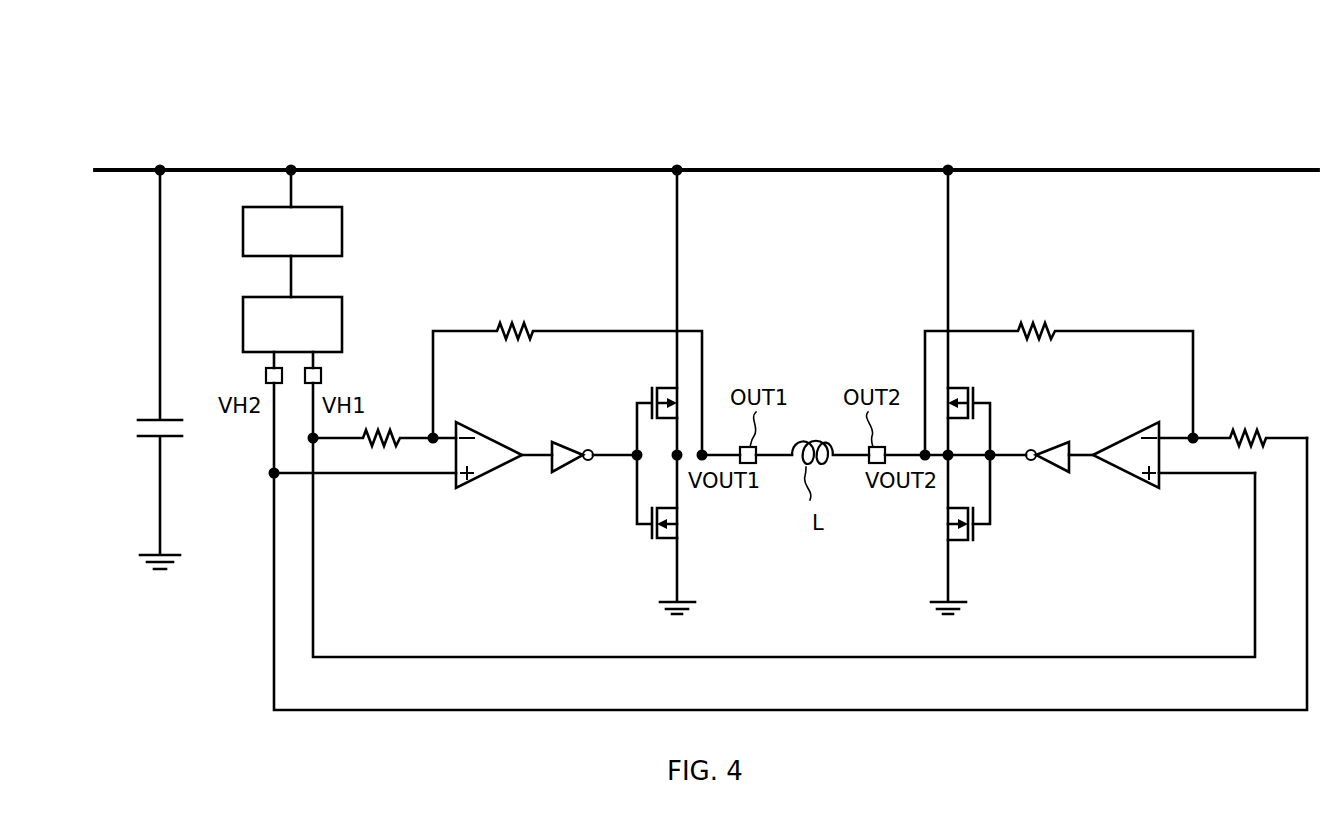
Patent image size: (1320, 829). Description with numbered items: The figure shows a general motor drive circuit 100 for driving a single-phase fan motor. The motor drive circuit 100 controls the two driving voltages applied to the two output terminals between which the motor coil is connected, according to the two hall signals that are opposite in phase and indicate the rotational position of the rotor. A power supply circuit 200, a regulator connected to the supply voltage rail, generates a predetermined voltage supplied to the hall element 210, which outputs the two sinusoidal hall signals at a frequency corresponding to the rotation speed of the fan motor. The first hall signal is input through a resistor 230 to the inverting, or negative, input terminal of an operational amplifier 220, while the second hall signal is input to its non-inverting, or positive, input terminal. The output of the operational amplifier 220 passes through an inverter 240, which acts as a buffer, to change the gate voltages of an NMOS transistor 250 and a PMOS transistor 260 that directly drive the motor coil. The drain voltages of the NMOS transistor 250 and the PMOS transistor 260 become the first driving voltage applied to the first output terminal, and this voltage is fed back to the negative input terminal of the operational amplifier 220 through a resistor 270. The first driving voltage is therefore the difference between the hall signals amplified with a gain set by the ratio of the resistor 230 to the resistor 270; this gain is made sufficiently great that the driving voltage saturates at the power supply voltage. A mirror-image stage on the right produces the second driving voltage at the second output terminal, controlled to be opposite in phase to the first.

The motor drive circuit 100 is at (777, 130).
The power supply circuit 200 is at (345, 237).
The hall element 210 is at (345, 321).
The operational amplifier 220 is at (459, 489).
The resistor 230 is at (398, 432).
The inverter 240 is at (558, 443).
The NMOS transistor 250 is at (649, 540).
The PMOS transistor 260 is at (652, 394).
The resistor 270 is at (489, 327).